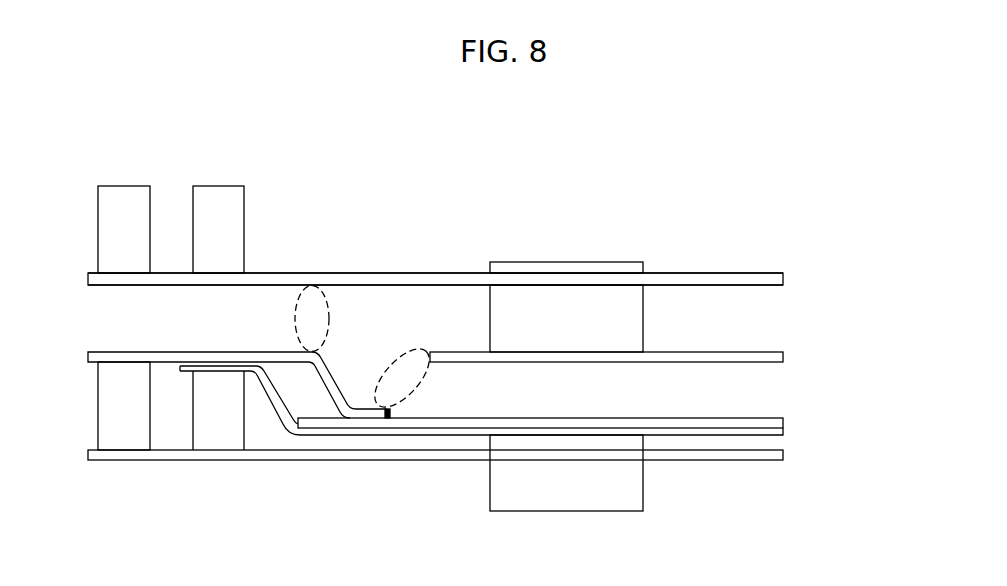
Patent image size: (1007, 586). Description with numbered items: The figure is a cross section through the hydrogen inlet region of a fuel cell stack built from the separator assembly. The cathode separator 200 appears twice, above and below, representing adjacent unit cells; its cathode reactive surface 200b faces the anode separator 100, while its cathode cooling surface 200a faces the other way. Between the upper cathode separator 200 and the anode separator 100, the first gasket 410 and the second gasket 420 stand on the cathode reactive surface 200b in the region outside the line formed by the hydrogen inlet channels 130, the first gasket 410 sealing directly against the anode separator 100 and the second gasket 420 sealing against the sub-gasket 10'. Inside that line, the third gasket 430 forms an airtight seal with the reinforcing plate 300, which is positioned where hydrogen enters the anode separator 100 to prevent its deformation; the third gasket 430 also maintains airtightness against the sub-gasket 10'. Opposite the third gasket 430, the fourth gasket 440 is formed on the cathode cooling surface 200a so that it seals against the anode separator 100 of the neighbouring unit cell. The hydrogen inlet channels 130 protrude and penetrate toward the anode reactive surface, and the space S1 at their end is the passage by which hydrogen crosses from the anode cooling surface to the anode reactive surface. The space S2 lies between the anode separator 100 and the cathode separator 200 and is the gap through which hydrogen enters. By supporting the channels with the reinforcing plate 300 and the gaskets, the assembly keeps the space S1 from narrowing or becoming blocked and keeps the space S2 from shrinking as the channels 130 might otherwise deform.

The first separator 100 is at (784, 355).
The hydrogen inlet channels 130 is at (335, 398).
The reinforcing plate 300 is at (784, 423).
The sub-gasket 10' is at (541, 413).
The second separator 200 is at (784, 279).
The second cooling surface 200a is at (768, 286).
The second reactive surface 200b is at (766, 273).
The first gasket 410 is at (124, 186).
The second gasket 420 is at (222, 186).
The third gasket 430 is at (570, 262).
The fourth gasket 440 is at (495, 312).
The space S1 is at (410, 392).
The space S2 is at (295, 312).